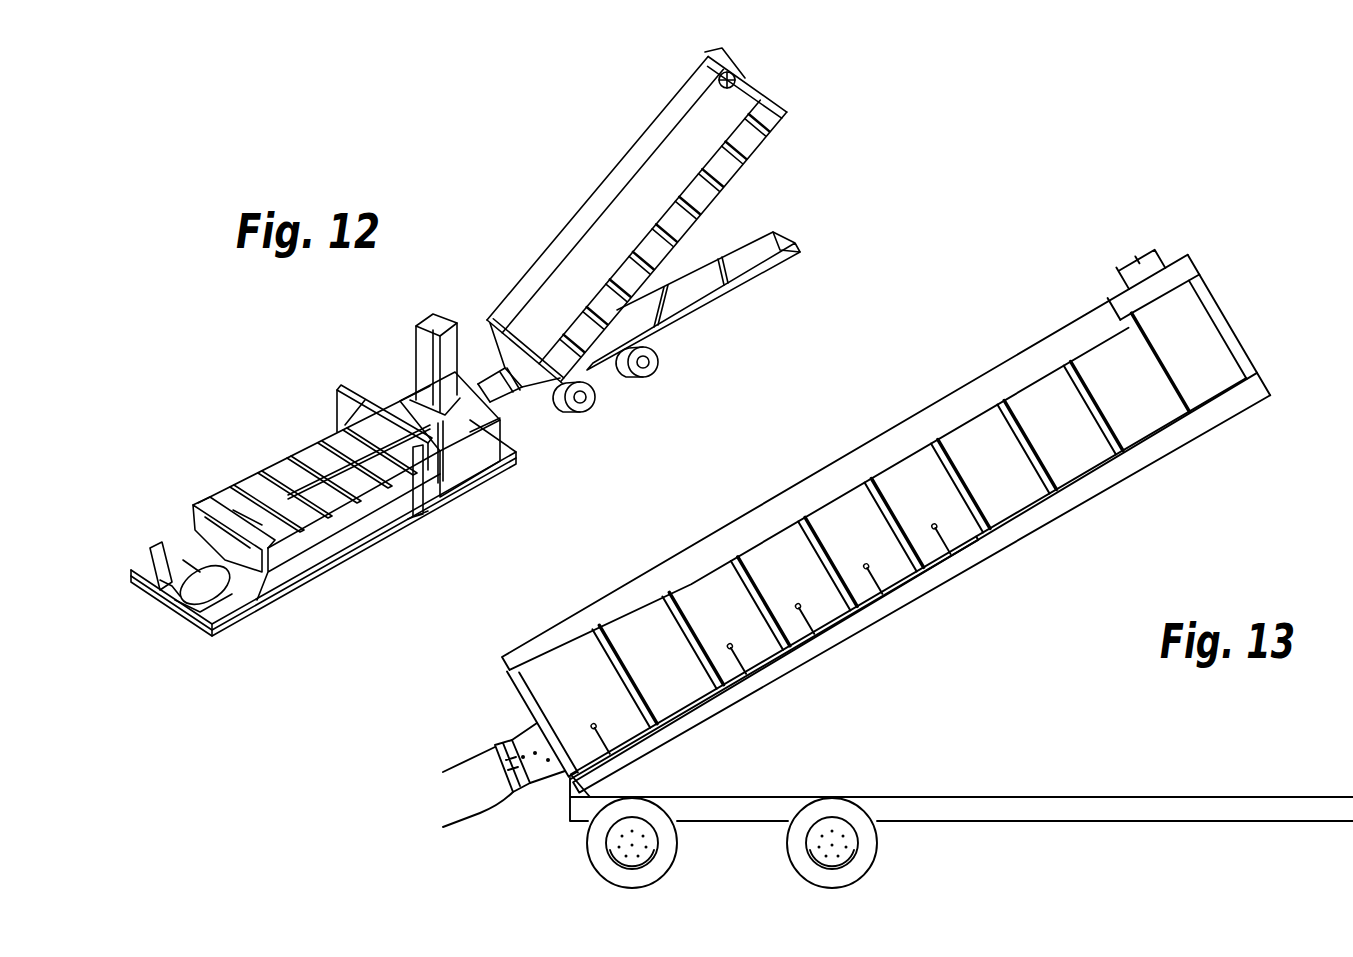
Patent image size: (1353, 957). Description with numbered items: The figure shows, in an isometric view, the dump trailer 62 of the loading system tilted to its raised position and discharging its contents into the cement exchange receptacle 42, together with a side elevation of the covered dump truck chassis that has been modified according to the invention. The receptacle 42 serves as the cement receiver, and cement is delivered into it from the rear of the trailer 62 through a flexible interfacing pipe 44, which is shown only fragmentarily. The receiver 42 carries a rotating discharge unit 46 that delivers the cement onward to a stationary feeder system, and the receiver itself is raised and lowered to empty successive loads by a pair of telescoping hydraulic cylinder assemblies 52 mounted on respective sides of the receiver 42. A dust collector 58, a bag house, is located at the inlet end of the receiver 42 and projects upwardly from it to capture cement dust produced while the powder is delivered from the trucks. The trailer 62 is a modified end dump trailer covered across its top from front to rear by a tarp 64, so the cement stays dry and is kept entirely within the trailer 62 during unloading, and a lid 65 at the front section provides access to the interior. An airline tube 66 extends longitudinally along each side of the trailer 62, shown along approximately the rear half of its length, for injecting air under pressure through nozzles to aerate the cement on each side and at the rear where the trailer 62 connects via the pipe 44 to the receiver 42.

In FIG. 12, the cement exchange receptacle 42 is at (323, 472).
In FIG. 12, the flexible interfacing pipe 44 is at (507, 388).
In FIG. 13, the flexible interfacing pipe 44 is at (462, 763).
In FIG. 12, the rotating discharge unit 46 is at (228, 614).
In FIG. 12, the telescoping hydraulic cylinder assemblies 52 is at (396, 528).
In FIG. 12, the dust collector 58 is at (432, 320).
In FIG. 12, the dump trailer 62 is at (643, 230).
In FIG. 13, the dump trailer 62 is at (878, 516).
In FIG. 13, the tarp 64 is at (1008, 378).
In FIG. 12, the lid 65 is at (718, 68).
In FIG. 13, the airline tube 66 is at (918, 588).